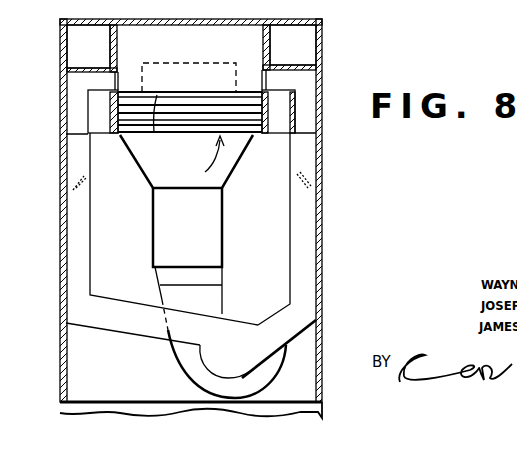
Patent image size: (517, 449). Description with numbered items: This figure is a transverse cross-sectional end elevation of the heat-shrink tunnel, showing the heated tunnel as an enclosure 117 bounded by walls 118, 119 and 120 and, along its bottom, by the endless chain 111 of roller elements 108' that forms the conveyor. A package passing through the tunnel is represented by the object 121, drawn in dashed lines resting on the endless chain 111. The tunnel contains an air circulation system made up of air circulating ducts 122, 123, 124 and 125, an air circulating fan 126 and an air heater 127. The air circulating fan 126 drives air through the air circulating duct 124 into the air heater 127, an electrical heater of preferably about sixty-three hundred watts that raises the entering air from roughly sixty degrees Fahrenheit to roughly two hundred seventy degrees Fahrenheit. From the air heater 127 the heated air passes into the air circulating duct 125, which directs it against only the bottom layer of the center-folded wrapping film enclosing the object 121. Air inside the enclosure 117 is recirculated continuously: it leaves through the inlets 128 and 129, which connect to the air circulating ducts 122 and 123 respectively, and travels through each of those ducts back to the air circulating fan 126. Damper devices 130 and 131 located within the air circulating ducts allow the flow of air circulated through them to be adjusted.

The roller elements 108' is at (190, 124).
The endless chain 111 is at (203, 158).
The enclosure 117 is at (200, 53).
The wall 118 is at (223, 21).
The wall 119 is at (117, 37).
The wall 120 is at (271, 55).
The object 121 is at (193, 88).
The air circulating duct 122 is at (80, 224).
The air circulating duct 123 is at (294, 213).
The air circulating duct 124 is at (222, 300).
The air circulating duct 125 is at (236, 168).
The air circulating fan 126 is at (257, 313).
The air heater 127 is at (205, 233).
The inlet 128 is at (110, 78).
The inlet 129 is at (266, 79).
The damper device 130 is at (70, 172).
The damper device 131 is at (322, 172).